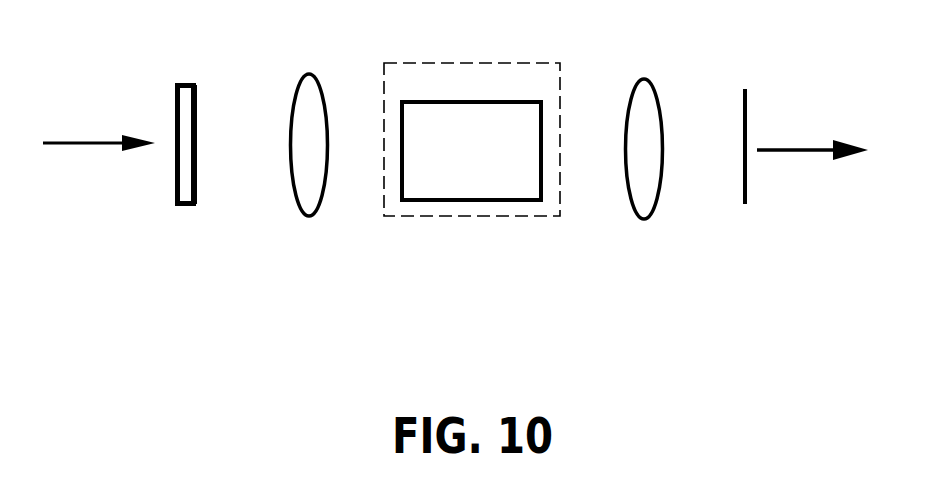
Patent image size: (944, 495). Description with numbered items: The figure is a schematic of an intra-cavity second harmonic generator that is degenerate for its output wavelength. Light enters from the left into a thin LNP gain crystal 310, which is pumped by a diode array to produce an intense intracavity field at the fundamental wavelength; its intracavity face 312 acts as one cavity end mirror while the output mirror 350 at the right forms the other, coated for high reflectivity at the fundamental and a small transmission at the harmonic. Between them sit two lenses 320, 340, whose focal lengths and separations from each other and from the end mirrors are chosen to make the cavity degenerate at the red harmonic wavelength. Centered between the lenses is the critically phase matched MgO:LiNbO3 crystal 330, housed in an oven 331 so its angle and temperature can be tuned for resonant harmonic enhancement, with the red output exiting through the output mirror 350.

The crystal 310 is at (185, 181).
The intracavity face 312 is at (203, 97).
The lens 320 is at (299, 70).
The MgO:LiNbO3 crystal 330 is at (487, 173).
The oven 331 is at (457, 60).
The lens 340 is at (625, 72).
The output mirror 350 is at (728, 72).